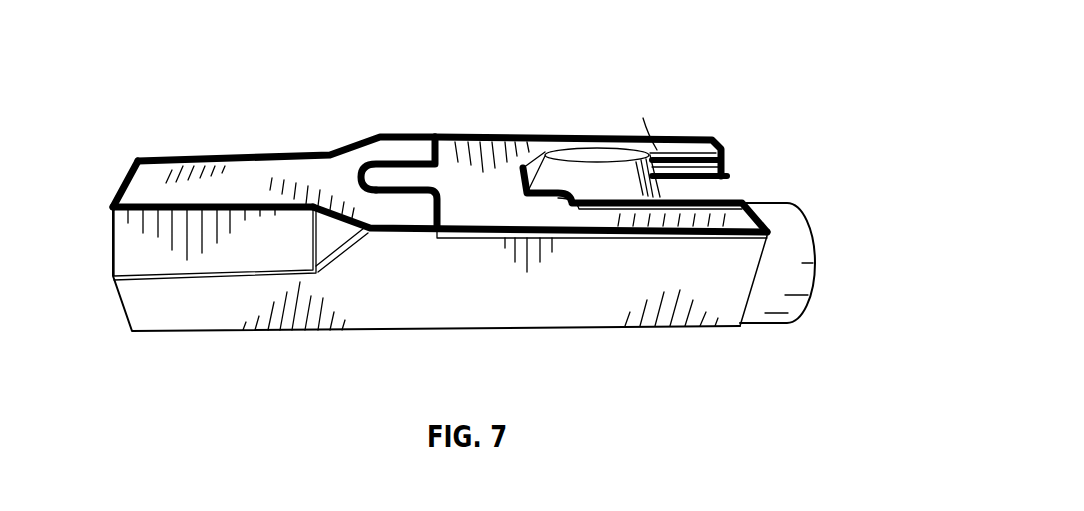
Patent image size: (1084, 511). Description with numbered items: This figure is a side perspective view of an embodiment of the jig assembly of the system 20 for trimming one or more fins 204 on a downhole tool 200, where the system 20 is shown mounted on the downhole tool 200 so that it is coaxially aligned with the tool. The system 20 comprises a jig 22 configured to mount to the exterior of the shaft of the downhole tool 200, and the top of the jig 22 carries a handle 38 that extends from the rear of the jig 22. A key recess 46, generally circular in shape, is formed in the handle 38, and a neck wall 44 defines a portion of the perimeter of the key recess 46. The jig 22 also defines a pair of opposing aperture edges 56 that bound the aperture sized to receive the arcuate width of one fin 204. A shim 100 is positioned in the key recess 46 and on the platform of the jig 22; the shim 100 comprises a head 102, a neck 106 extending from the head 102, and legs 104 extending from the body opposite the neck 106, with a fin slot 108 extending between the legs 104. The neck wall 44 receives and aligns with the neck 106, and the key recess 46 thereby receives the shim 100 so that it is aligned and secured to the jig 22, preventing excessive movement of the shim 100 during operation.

The system 20 is at (311, 75).
The jig 22 is at (203, 358).
The handle 38 is at (252, 157).
The neck wall 44 is at (382, 158).
The key recess 46 is at (420, 157).
The aperture edges 56 is at (700, 172).
The shim 100 is at (486, 121).
The head 102 is at (387, 178).
The legs 104 is at (335, 383).
The neck 106 is at (507, 207).
The fin slot 108 is at (676, 158).
The downhole tool 200 is at (814, 191).
The fins 204 is at (578, 157).